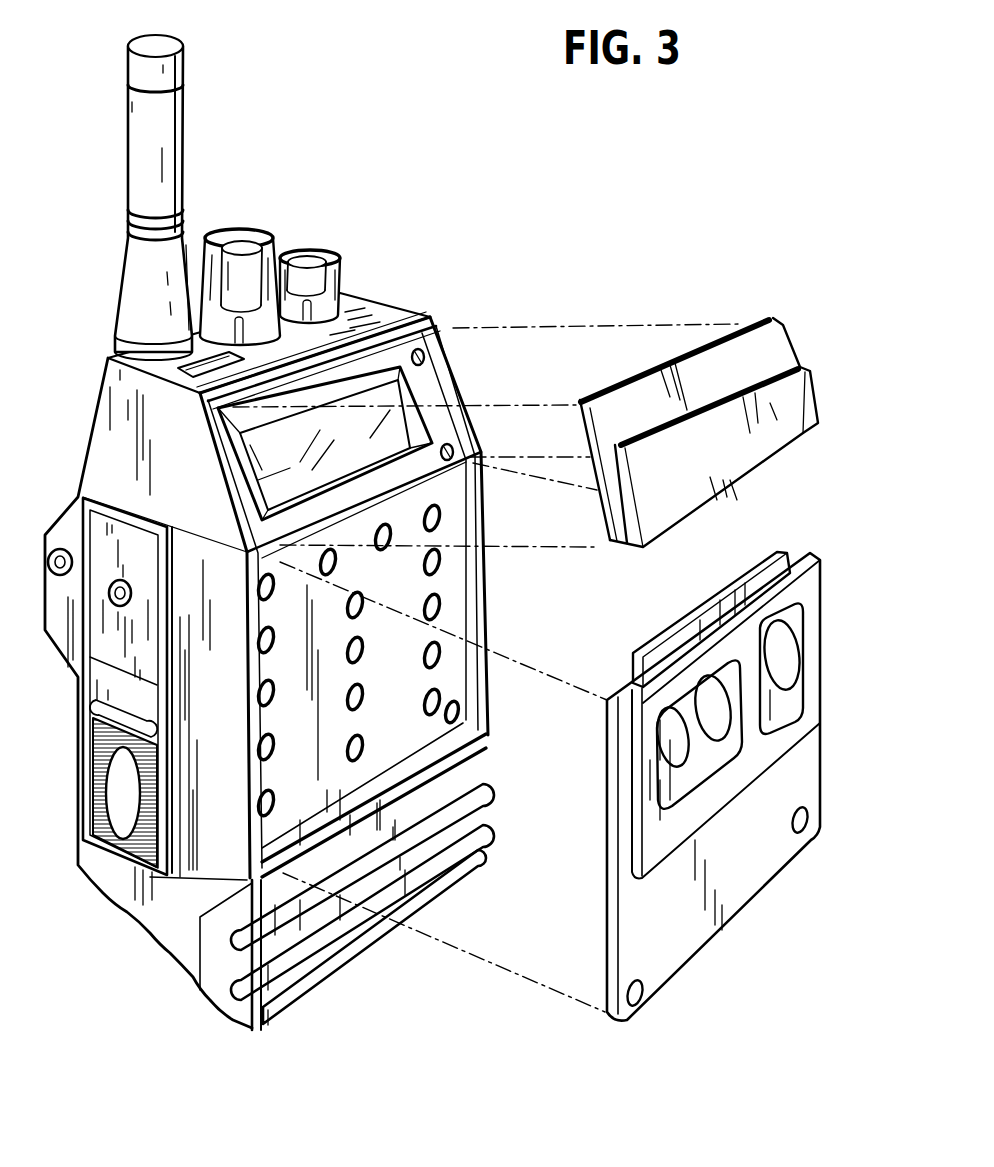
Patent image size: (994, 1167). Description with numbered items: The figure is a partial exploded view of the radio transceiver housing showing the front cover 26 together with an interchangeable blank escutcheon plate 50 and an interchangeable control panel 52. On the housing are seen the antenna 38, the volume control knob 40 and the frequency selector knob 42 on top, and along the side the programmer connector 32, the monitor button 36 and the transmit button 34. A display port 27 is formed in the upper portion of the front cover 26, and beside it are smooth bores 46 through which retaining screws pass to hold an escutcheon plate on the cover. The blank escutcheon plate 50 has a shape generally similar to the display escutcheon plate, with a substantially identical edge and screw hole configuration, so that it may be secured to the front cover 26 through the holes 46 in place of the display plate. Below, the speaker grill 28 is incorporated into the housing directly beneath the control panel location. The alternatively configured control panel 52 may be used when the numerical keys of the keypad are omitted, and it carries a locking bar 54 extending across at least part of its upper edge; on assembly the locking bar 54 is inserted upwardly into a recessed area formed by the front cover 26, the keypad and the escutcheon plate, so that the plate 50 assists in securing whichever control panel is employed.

The front cover 26 is at (487, 605).
The display port 27 is at (294, 462).
The speaker grill 28 is at (472, 815).
The programmer connector 32 is at (150, 607).
The transmit button 34 is at (108, 777).
The monitor button 36 is at (150, 715).
The antenna 38 is at (167, 113).
The volume control knob 40 is at (252, 238).
The frequency selector knob 42 is at (321, 258).
The smooth bores 46 is at (440, 328).
The blank escutcheon plate 50 is at (800, 407).
The alternatively configured control panel 52 is at (803, 765).
The locking bar 54 is at (700, 618).